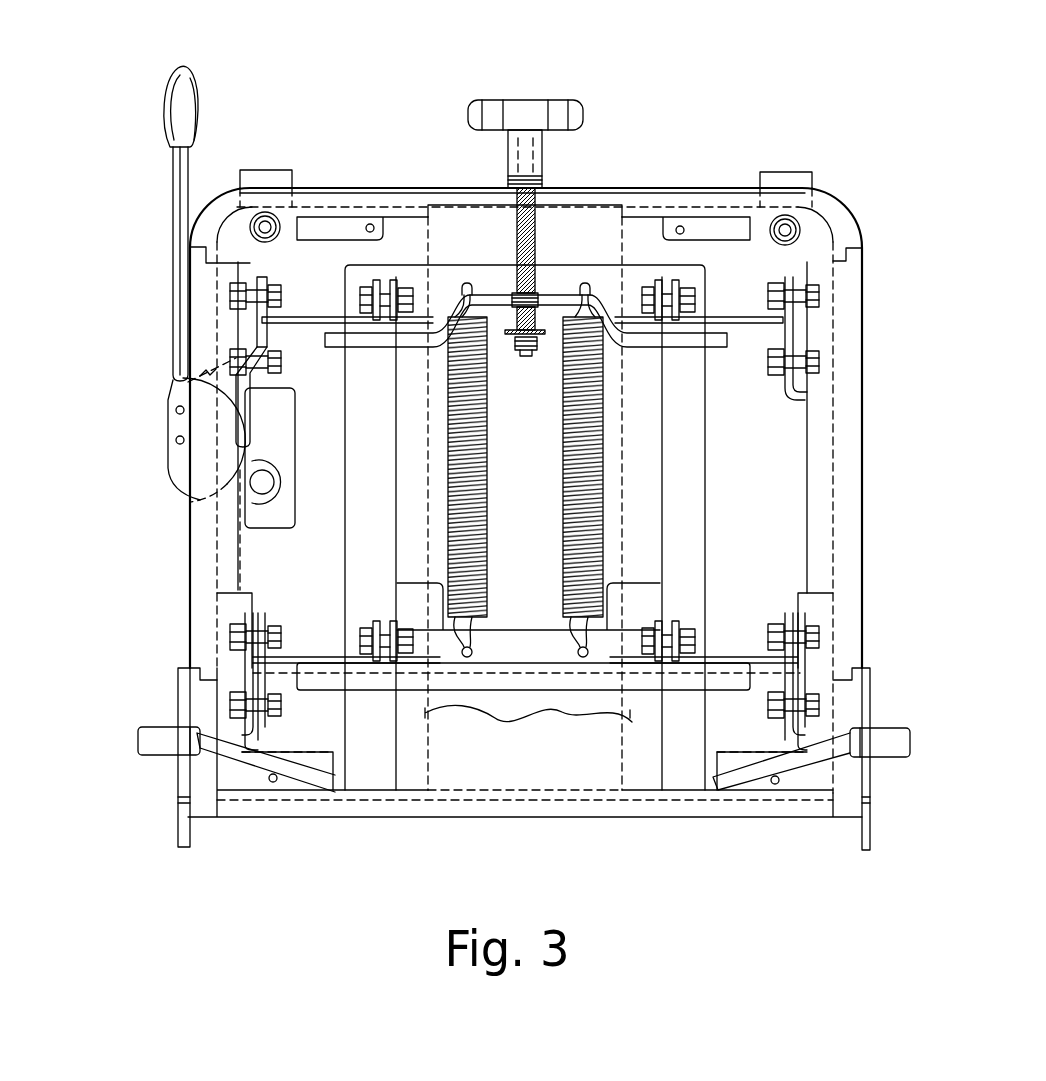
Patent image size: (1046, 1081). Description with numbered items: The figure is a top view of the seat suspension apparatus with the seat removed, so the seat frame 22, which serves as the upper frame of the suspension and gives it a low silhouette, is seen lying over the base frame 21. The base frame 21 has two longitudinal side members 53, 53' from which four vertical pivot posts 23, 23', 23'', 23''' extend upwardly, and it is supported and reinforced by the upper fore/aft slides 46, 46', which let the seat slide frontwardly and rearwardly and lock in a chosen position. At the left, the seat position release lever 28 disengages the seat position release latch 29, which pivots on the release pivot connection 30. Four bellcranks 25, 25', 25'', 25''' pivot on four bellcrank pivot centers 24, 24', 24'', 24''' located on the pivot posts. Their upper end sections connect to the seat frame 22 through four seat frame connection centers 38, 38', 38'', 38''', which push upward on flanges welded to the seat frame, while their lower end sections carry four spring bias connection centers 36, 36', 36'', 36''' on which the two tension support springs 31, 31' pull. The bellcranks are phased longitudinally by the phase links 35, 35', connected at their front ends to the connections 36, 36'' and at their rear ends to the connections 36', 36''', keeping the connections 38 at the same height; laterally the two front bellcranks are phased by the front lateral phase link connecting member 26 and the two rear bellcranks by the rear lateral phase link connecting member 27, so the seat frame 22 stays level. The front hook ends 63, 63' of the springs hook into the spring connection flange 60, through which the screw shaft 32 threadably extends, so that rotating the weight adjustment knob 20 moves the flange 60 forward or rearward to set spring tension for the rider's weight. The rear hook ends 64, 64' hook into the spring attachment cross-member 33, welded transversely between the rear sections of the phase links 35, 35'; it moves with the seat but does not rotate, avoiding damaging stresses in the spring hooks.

The weight adjustment knob 20 is at (540, 112).
The base frame 21 is at (404, 228).
The seat frame 22 is at (352, 196).
The vertical pivot post 23 is at (875, 299).
The vertical pivot post 23' is at (831, 754).
The vertical pivot post 23'' is at (165, 314).
The vertical pivot post 23''' is at (202, 749).
The bellcrank pivot center 24 is at (789, 366).
The bellcrank pivot center 24' is at (771, 681).
The bellcrank pivot center 24'' is at (291, 397).
The bellcrank pivot center 24''' is at (285, 681).
The bellcrank 25 is at (699, 301).
The bellcrank 25' is at (721, 630).
The bellcrank 25'' is at (347, 299).
The bellcrank 25''' is at (328, 630).
The front lateral phase link connecting member 26 is at (640, 345).
The rear lateral phase link connecting member 27 is at (520, 665).
The seat position release lever 28 is at (183, 102).
The seat position release latch 29 is at (172, 462).
The release pivot connection 30 is at (258, 476).
The tension support spring 31 is at (550, 467).
The tension support spring 31' is at (504, 467).
The screw shaft 32 is at (533, 237).
The spring attachment cross-member 33 is at (540, 647).
The phase link 35 is at (650, 527).
The phase link 35' is at (404, 527).
The spring bias connection center 36 is at (682, 277).
The spring bias connection center 36' is at (668, 693).
The spring bias connection center 36'' is at (369, 277).
The spring bias connection center 36''' is at (380, 690).
The seat frame connection center 38 is at (783, 272).
The seat frame connection center 38' is at (779, 602).
The seat frame connection center 38'' is at (273, 291).
The seat frame connection center 38''' is at (277, 606).
The upper fore/aft slide 46 is at (787, 142).
The upper fore/aft slide 46' is at (264, 142).
The longitudinal side member 53 is at (760, 484).
The longitudinal side member 53' is at (320, 470).
The spring connection flange 60 is at (553, 336).
The front hook end 63 is at (619, 227).
The front hook end 63' is at (459, 227).
The rear hook end 64 is at (580, 693).
The rear hook end 64' is at (463, 693).